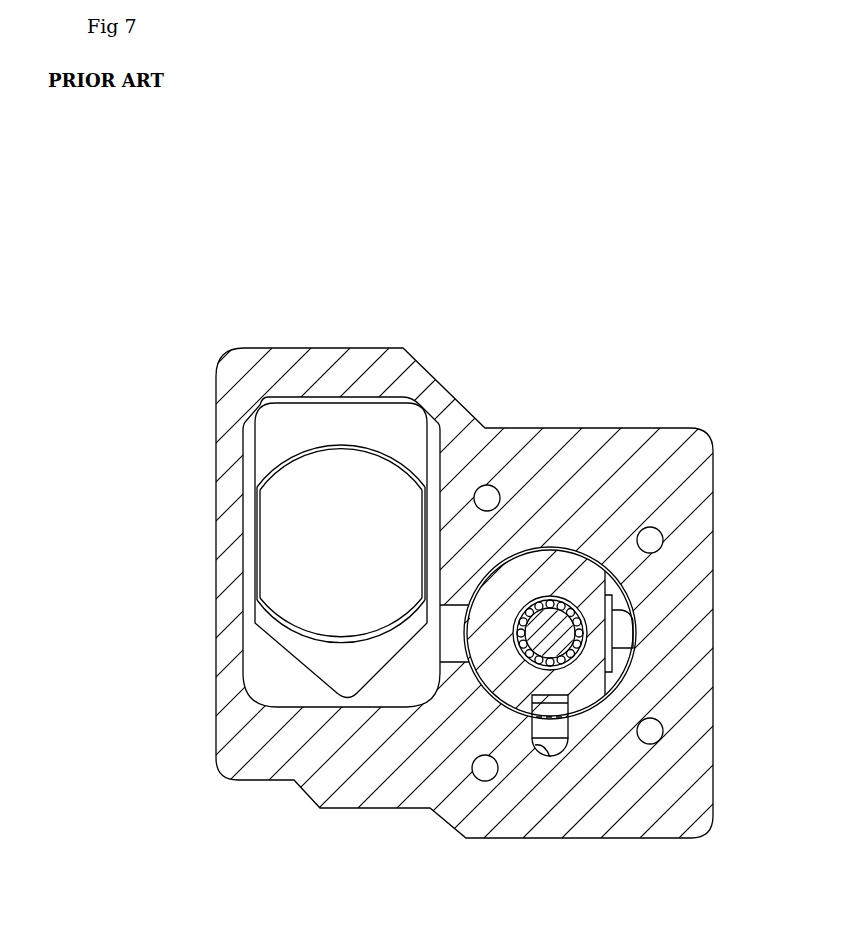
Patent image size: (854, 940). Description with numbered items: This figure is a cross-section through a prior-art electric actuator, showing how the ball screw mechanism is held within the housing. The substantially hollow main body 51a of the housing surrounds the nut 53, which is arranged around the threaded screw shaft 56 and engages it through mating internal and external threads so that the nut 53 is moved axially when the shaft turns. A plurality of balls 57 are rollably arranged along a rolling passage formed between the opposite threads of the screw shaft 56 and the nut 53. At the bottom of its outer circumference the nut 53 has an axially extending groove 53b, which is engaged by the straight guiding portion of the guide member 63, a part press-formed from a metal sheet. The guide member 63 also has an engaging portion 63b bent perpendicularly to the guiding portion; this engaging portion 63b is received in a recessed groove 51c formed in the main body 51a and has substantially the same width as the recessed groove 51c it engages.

The main body 51a is at (652, 455).
The nut 53 is at (537, 570).
The threaded screw shaft 56 is at (558, 618).
The balls 57 is at (527, 621).
The groove 53b is at (568, 718).
The guide member 63 is at (585, 729).
The recessed groove 51c is at (535, 752).
The engaging portion 63b is at (555, 738).